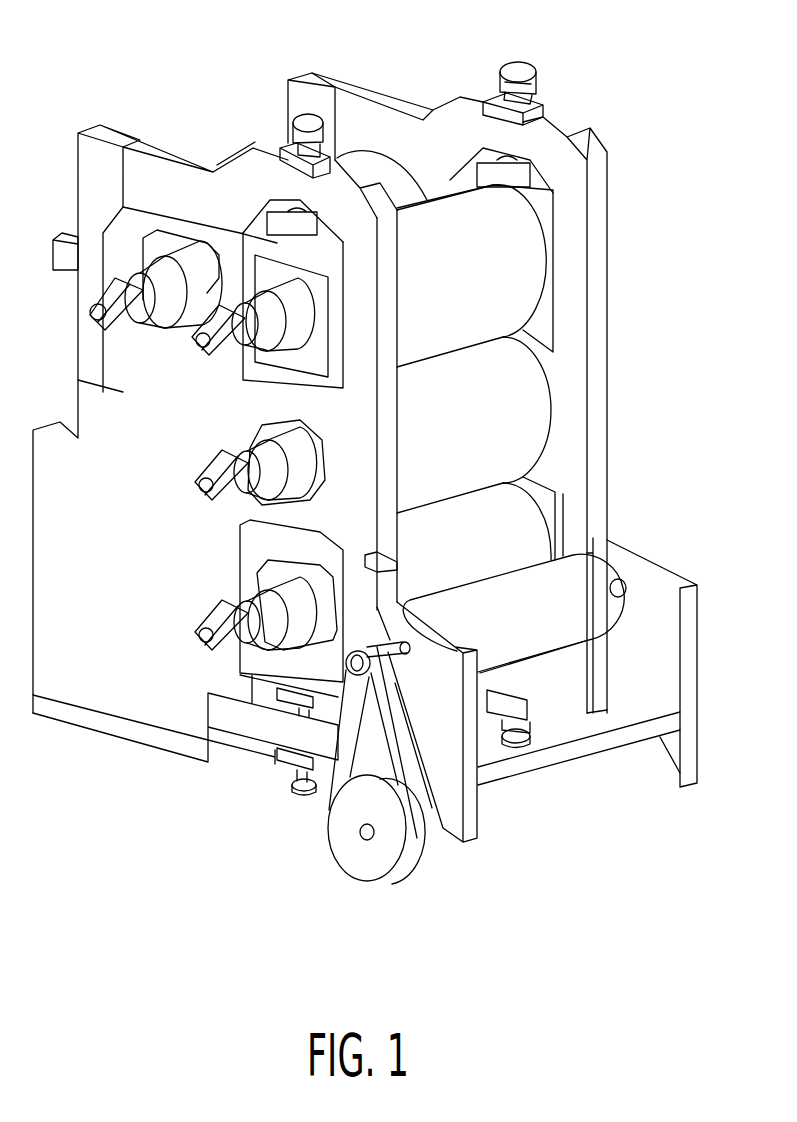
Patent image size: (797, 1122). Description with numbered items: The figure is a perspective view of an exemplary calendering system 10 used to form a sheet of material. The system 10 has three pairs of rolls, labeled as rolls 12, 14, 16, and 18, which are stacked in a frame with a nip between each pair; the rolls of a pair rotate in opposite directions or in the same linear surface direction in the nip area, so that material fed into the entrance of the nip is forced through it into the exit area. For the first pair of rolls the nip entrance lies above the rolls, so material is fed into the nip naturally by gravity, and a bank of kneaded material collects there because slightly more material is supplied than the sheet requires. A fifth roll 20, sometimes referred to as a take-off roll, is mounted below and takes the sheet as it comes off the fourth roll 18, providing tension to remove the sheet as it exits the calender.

The calendering system 10 is at (648, 74).
The roll 12 is at (393, 165).
The roll 14 is at (475, 301).
The roll 16 is at (475, 443).
The fourth roll 18 is at (485, 563).
The take-off roll 20 is at (542, 633).